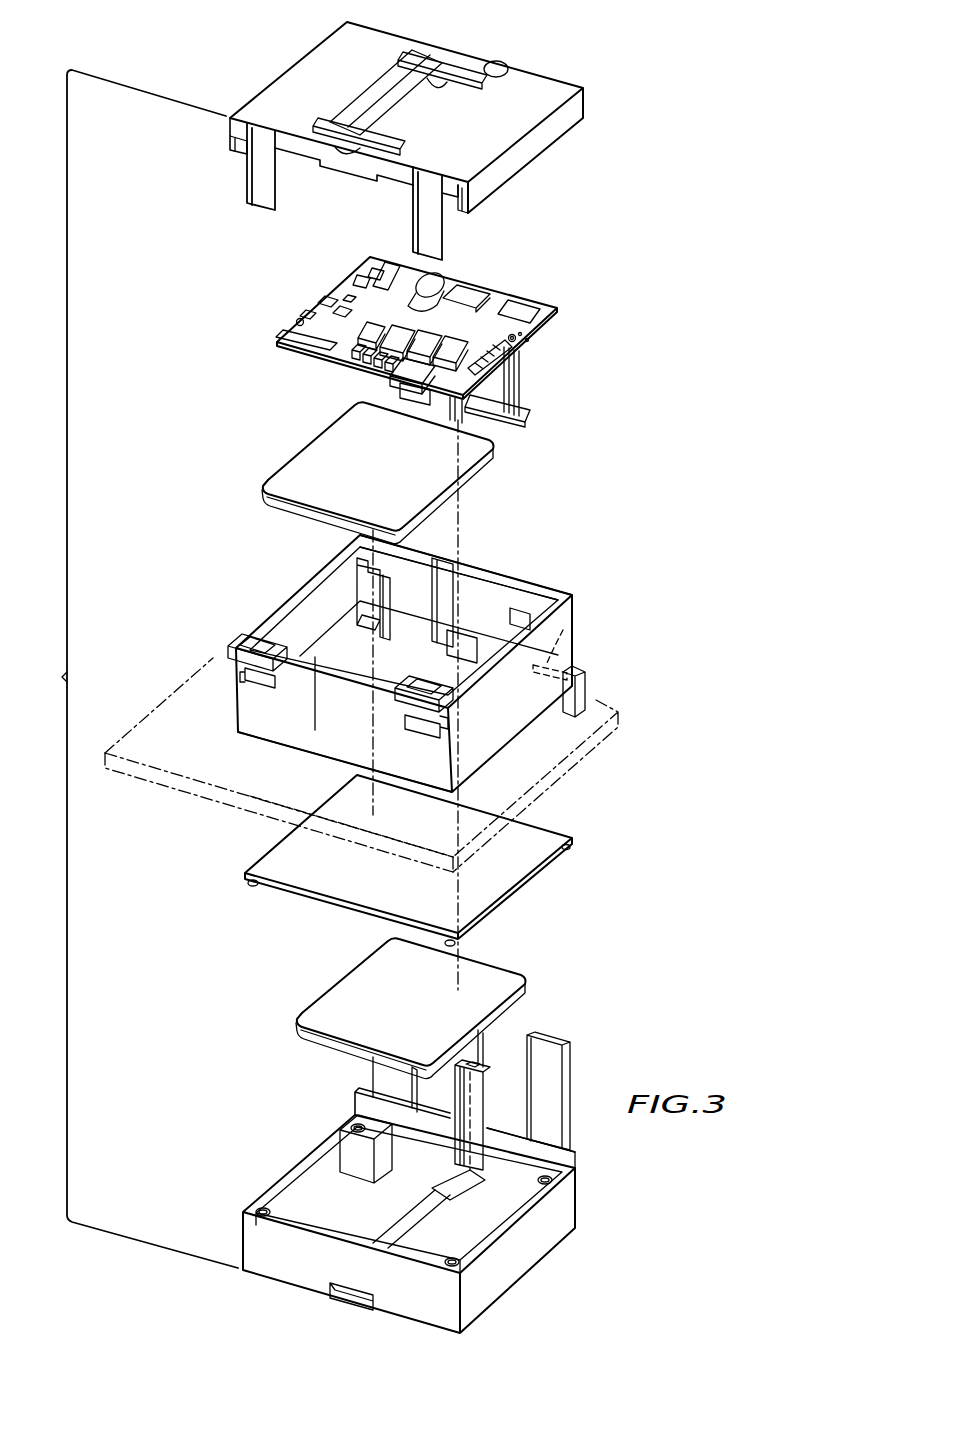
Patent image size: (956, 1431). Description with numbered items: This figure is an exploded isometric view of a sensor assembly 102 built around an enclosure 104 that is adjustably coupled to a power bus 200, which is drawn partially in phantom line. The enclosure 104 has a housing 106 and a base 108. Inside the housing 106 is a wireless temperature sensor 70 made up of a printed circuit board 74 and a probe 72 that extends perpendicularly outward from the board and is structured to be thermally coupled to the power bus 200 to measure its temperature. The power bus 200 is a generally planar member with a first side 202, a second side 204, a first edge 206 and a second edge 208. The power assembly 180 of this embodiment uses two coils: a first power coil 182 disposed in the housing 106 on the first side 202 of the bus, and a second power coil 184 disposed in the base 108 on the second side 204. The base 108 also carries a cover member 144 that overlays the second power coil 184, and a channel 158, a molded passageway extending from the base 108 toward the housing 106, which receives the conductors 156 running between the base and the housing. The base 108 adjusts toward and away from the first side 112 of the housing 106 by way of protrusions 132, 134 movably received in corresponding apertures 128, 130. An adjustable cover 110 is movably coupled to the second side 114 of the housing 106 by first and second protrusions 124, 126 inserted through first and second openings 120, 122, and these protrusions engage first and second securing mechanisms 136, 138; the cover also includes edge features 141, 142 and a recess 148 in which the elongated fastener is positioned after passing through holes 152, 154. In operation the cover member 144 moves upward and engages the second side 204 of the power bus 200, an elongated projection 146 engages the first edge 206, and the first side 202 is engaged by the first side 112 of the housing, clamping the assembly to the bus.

The wireless temperature sensor 70 is at (578, 327).
The probe 72 is at (533, 402).
The printed circuit board 74 is at (543, 308).
The sensor assembly 102 is at (182, 1298).
The enclosure 104 is at (57, 692).
The housing 106 is at (563, 612).
The base 108 is at (553, 1235).
The adjustable cover 110 is at (522, 118).
The first side 112 is at (505, 762).
The second side 114 is at (513, 575).
The first opening 120 is at (252, 640).
The second opening 122 is at (428, 693).
The first protrusion 124 is at (250, 177).
The second protrusion 126 is at (420, 211).
The aperture 128 is at (400, 618).
The aperture 130 is at (575, 625).
The protrusion 132 is at (385, 1070).
The protrusion 134 is at (557, 1062).
The first securing mechanism 136 is at (260, 682).
The second securing mechanism 138 is at (417, 726).
The first notch 141 is at (233, 153).
The second notch 142 is at (467, 213).
The cover member 144 is at (318, 878).
The elongated projection 146 is at (560, 1163).
The recess 148 is at (405, 105).
The second hole 152 is at (438, 80).
The third hole 154 is at (342, 148).
The conductors 156 is at (480, 1040).
The channel 158 is at (467, 1103).
The power assembly 180 is at (292, 437).
The first power coil 182 is at (337, 425).
The second power coil 184 is at (368, 972).
The power bus 200 is at (606, 746).
The first side 202 is at (553, 752).
The second side 204 is at (192, 800).
The first edge 206 is at (600, 703).
The second edge 208 is at (373, 840).